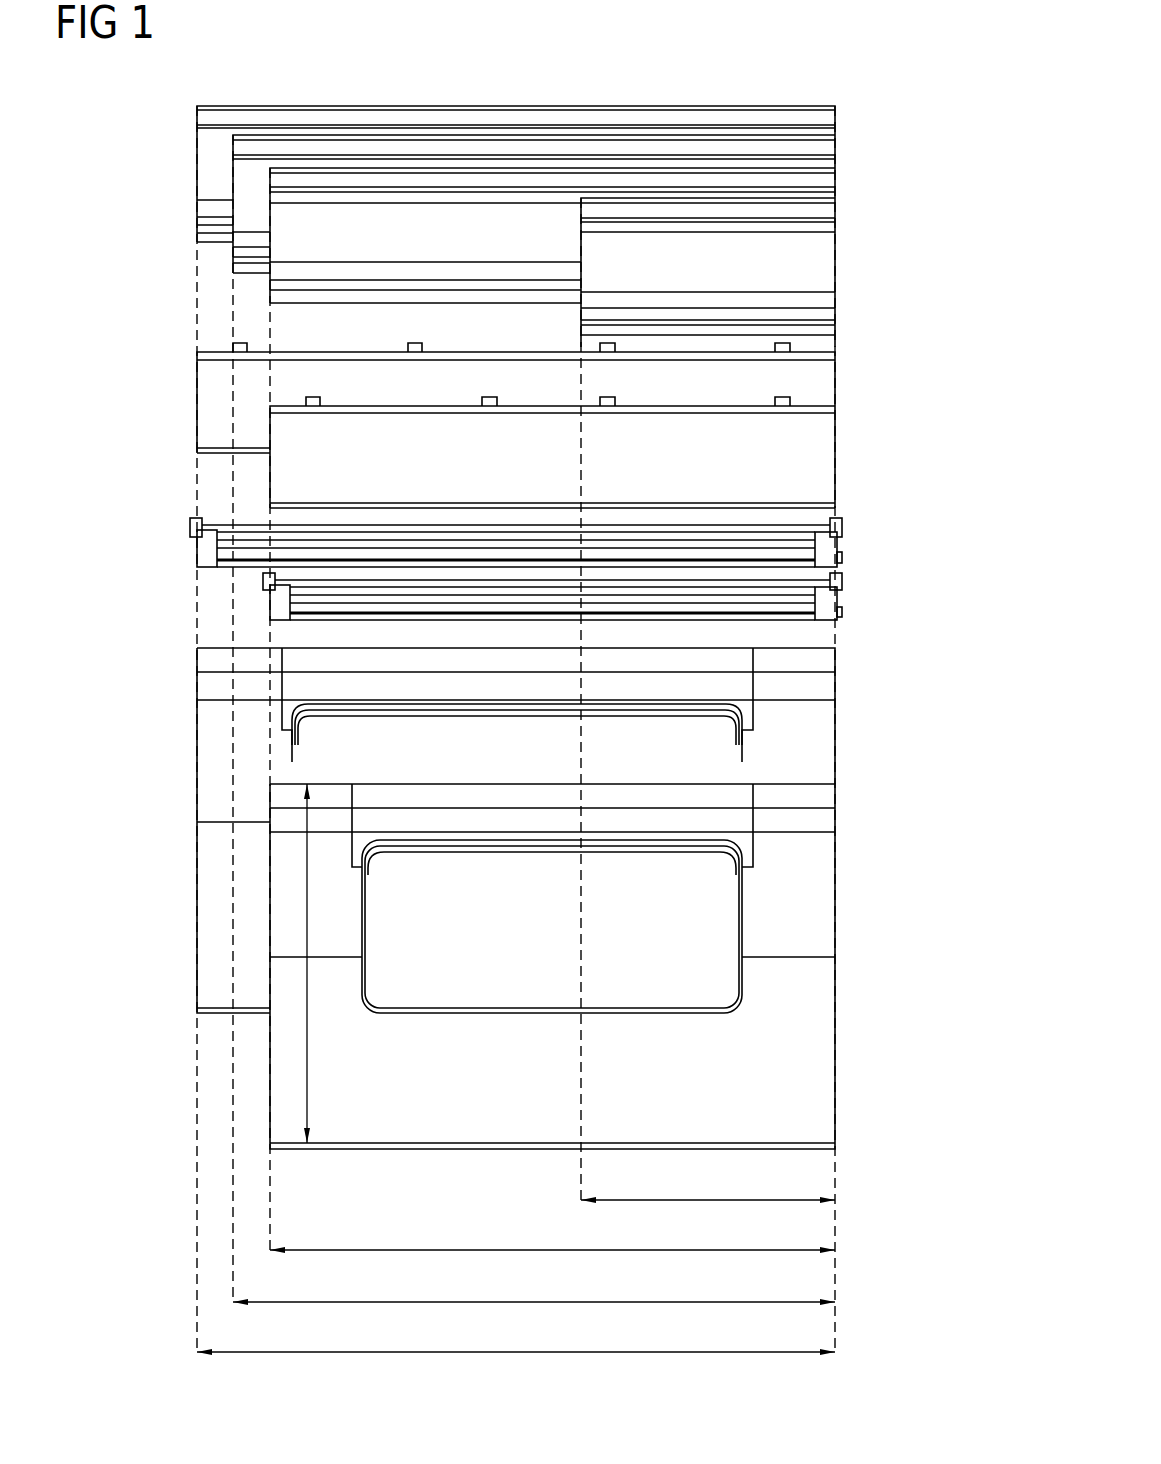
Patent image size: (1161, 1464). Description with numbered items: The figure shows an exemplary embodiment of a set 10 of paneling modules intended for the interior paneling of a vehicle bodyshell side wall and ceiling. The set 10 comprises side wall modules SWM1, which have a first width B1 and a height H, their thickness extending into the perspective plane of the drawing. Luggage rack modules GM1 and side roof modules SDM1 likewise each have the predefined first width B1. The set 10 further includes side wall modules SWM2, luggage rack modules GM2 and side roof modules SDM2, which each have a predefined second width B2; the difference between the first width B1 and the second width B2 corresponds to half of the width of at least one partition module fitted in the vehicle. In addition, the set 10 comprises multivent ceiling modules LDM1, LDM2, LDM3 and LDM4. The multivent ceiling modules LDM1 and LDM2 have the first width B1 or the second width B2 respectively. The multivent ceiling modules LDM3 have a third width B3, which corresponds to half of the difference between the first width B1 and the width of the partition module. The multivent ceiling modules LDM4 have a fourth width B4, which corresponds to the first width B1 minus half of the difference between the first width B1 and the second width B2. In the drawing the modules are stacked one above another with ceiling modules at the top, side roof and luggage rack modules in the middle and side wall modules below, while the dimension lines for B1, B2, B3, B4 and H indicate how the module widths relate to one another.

The set of paneling modules 10 is at (157, 882).
The multivent ceiling module LDM1 is at (195, 173).
The multivent ceiling module LDM2 is at (270, 285).
The multivent ceiling module LDM3 is at (838, 264).
The multivent ceiling module LDM4 is at (233, 250).
The side roof module SDM1 is at (838, 381).
The side roof module SDM2 is at (838, 453).
The luggage rack module GM1 is at (838, 541).
The luggage rack module GM2 is at (838, 596).
The side wall module SWM1 is at (838, 744).
The side wall module SWM2 is at (838, 899).
The height H is at (317, 963).
The first width B1 is at (516, 1337).
The second width B2 is at (552, 1235).
The third width B3 is at (708, 1185).
The fourth width B4 is at (534, 1287).